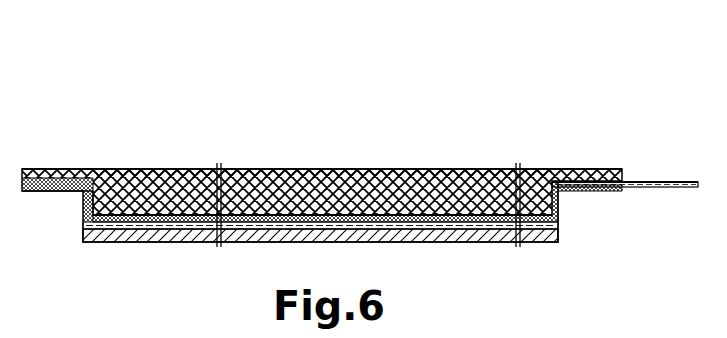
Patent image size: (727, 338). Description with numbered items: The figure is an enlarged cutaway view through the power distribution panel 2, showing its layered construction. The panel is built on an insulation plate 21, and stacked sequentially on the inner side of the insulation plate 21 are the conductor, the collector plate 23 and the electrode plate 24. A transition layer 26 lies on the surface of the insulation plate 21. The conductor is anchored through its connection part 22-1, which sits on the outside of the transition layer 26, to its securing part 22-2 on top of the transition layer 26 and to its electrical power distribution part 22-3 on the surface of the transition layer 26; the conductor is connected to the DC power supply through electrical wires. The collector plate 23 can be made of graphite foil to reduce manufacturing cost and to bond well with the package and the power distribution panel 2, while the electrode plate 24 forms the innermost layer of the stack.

The power distribution panel 2 is at (360, 135).
The insulation plate 21 is at (157, 182).
The connection part 22-1 is at (649, 182).
The securing part 22-2 is at (530, 216).
The electrical power distribution part 22-3 is at (441, 216).
The collector plate 23 is at (299, 226).
The electrode plate 24 is at (384, 237).
The transition layer 26 is at (205, 167).